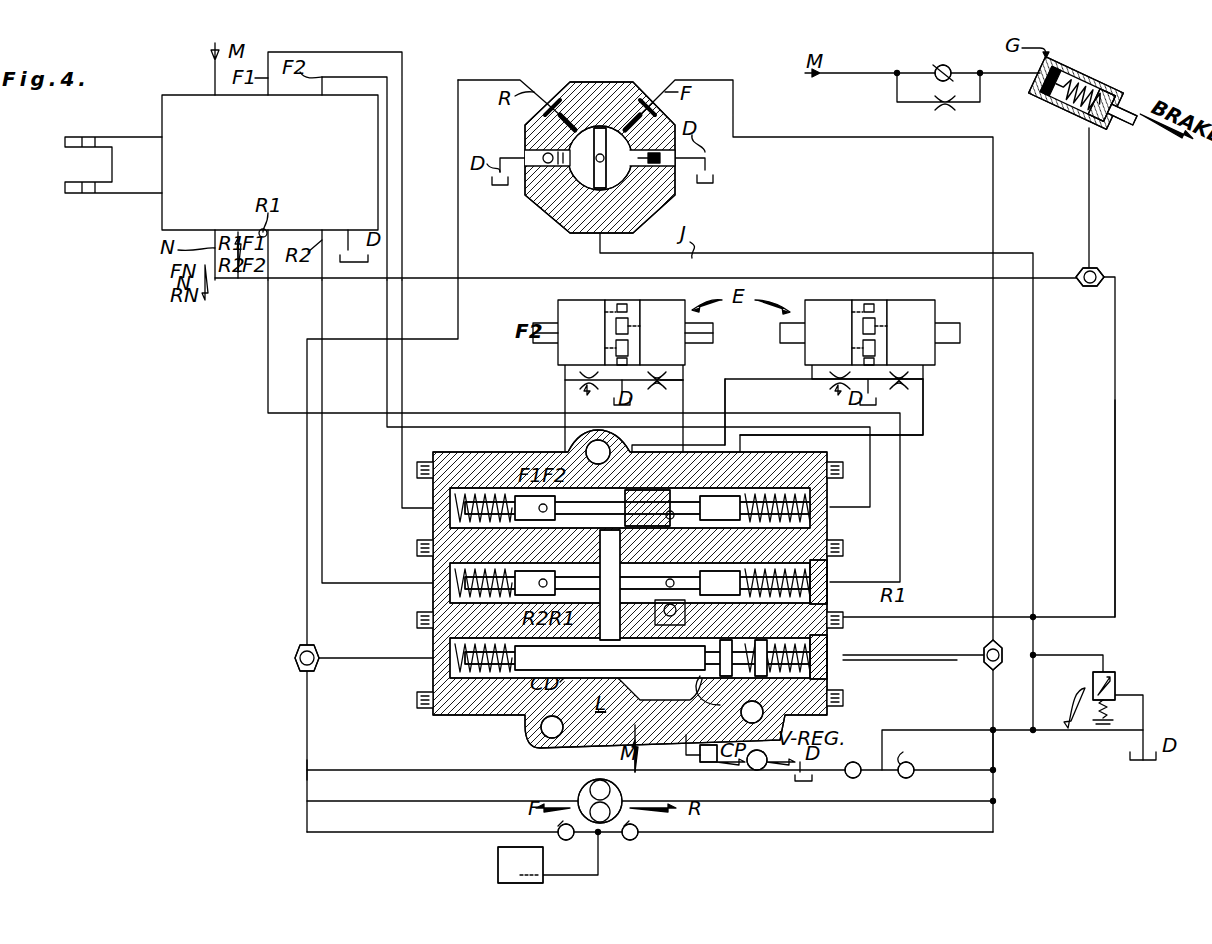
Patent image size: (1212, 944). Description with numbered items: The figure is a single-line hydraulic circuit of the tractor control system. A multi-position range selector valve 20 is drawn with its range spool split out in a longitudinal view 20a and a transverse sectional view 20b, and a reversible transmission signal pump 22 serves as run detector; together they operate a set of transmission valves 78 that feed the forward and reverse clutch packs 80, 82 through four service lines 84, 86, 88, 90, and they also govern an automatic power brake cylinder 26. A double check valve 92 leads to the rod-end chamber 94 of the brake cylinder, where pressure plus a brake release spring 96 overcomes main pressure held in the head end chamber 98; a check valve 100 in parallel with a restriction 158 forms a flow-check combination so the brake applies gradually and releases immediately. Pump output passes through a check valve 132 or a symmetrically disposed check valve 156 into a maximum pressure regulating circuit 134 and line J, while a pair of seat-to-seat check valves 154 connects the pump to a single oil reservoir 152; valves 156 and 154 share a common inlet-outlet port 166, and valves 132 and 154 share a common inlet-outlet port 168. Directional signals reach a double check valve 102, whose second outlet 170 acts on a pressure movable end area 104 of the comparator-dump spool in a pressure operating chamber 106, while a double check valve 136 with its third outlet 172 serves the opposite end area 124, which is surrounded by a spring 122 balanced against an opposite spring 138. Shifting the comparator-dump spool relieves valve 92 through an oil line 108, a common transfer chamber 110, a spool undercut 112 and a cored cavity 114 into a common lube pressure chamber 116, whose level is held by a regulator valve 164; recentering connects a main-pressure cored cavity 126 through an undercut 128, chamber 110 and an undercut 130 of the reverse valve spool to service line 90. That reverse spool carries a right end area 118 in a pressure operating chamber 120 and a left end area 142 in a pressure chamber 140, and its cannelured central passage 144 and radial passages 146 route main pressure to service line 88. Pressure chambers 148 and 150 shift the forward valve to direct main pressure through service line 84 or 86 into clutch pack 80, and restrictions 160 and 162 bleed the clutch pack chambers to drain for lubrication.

The range selector valve 20 is at (523, 132).
The range spool longitudinal view 20a is at (65, 137).
The range spool transverse sectional view 20b is at (575, 182).
The transmission signal pump 22 is at (580, 792).
The automatic power brake cylinder 26 is at (1056, 153).
The transmission valves 78 is at (621, 590).
The forward speed clutch pack 80 is at (558, 307).
The reverse speed clutch pack 82 is at (915, 312).
The service line 84 is at (565, 386).
The service line 86 is at (668, 404).
The service line 88 is at (727, 385).
The service line 90 is at (923, 434).
The double check valve 92 is at (1098, 270).
The rod-end chamber 94 is at (1105, 55).
The brake release spring 96 is at (1050, 126).
The head end chamber 98 is at (1019, 104).
The check valve 100 is at (936, 70).
The double check valve 102 is at (300, 648).
The pressure movable end area 104 is at (433, 673).
The pressure operating chamber 106 is at (433, 623).
The oil line 108 is at (1115, 540).
The common transfer chamber 110 is at (624, 580).
The spool undercut 112 is at (719, 703).
The cored cavity 114 is at (744, 658).
The common lube pressure chamber 116 is at (624, 665).
The pressure movable right end area 118 is at (815, 582).
The pressure operating chamber 120 is at (827, 560).
The spring 122 is at (827, 632).
The pressure movable end area 124 is at (815, 660).
The cored cavity 126 is at (596, 670).
The undercut 128 is at (667, 748).
The undercut 130 is at (680, 488).
The check valve 132 is at (925, 758).
The maximum pressure regulating circuit 134 is at (1093, 684).
The double check valve 136 is at (987, 648).
The spring 138 is at (440, 642).
The pressure chamber 140 is at (433, 565).
The pressure movable left end area 142 is at (440, 587).
The longitudinal central passage 144 is at (662, 494).
The radial passages 146 is at (480, 524).
The pressure chamber 148 is at (482, 468).
The pressure chamber 150 is at (812, 506).
The oil reservoir 152 is at (498, 865).
The check valves 154 is at (572, 840).
The check valve 156 is at (865, 755).
The restriction 158 is at (943, 104).
The restrictions 160 is at (626, 394).
The restrictions 162 is at (933, 400).
The pressure regulator 164 is at (757, 770).
The common inlet-outlet port 166 is at (307, 768).
The common inlet-outlet port 168 is at (993, 758).
The second outlet 170 is at (325, 658).
The third outlet 172 is at (957, 660).